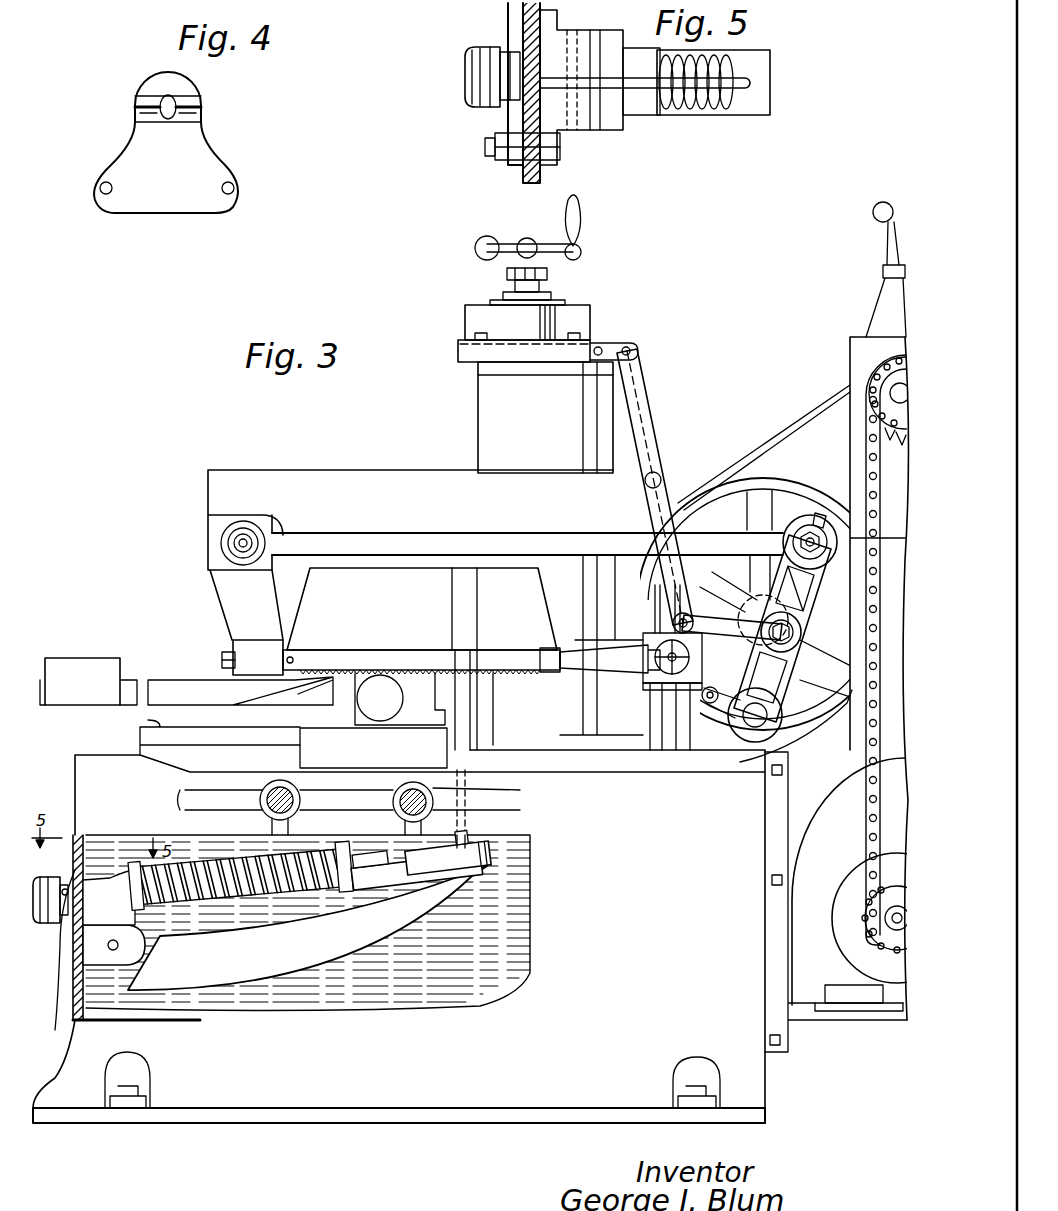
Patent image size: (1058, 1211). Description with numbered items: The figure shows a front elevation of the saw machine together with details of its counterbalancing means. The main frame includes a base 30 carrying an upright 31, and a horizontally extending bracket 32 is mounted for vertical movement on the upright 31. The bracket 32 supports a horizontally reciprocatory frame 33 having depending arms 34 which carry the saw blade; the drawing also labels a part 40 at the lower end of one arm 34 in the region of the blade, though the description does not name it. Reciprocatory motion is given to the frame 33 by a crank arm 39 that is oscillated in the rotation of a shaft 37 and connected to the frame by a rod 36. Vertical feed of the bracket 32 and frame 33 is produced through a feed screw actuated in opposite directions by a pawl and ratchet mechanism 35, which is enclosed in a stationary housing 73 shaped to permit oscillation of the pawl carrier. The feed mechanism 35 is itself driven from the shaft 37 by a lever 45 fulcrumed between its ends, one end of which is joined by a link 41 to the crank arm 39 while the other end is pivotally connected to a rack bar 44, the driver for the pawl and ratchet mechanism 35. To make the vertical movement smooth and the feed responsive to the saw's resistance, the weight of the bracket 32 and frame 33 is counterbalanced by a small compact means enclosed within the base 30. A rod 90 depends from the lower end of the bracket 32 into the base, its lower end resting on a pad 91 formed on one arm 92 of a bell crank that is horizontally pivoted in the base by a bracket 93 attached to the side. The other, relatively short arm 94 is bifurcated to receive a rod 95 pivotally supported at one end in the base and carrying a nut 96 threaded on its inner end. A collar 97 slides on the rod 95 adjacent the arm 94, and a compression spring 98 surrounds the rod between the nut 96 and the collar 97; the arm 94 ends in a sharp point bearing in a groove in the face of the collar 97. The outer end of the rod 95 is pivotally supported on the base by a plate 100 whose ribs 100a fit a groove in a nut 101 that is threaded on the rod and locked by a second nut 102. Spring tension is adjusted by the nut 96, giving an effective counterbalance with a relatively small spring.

In FIG. 5, the base 30 is at (525, 115).
In FIG. 3, the base 30 is at (410, 1095).
In FIG. 3, the upright 31 is at (490, 412).
In FIG. 3, the bracket 32 is at (462, 594).
In FIG. 3, the reciprocatory frame 33 is at (245, 466).
In FIG. 3, the depending arms 34 is at (245, 612).
In FIG. 3, the pawl and ratchet mechanism 35 is at (603, 306).
In FIG. 3, the rod 36 is at (365, 540).
In FIG. 3, the shaft 37 is at (628, 612).
In FIG. 3, the crank arm 39 is at (785, 680).
In FIG. 3, the blade clamp 40 is at (202, 668).
In FIG. 3, the link 41 is at (708, 634).
In FIG. 3, the rack bar 44 is at (458, 350).
In FIG. 3, the lever 45 is at (645, 412).
In FIG. 3, the stationary housing 73 is at (470, 320).
In FIG. 3, the rod 90 is at (465, 783).
In FIG. 3, the pad 91 is at (483, 874).
In FIG. 5, the arm 92 is at (760, 68).
In FIG. 3, the arm 92 is at (293, 978).
In FIG. 5, the bracket 93 is at (572, 128).
In FIG. 3, the bracket 93 is at (130, 962).
In FIG. 5, the arm 94 is at (626, 100).
In FIG. 3, the arm 94 is at (130, 874).
In FIG. 5, the rod 95 is at (736, 90).
In FIG. 3, the rod 95 is at (375, 878).
In FIG. 3, the nut 96 is at (364, 870).
In FIG. 5, the collar 97 is at (660, 100).
In FIG. 3, the collar 97 is at (240, 905).
In FIG. 5, the compression spring 98 is at (703, 100).
In FIG. 3, the compression spring 98 is at (300, 906).
In FIG. 4, the plate 100 is at (200, 153).
In FIG. 3, the plate 100 is at (85, 862).
In FIG. 4, the ribs 100a is at (205, 105).
In FIG. 3, the ribs 100a is at (62, 890).
In FIG. 5, the nut 101 is at (478, 62).
In FIG. 3, the nut 101 is at (72, 986).
In FIG. 5, the second nut 102 is at (468, 78).
In FIG. 3, the second nut 102 is at (45, 940).